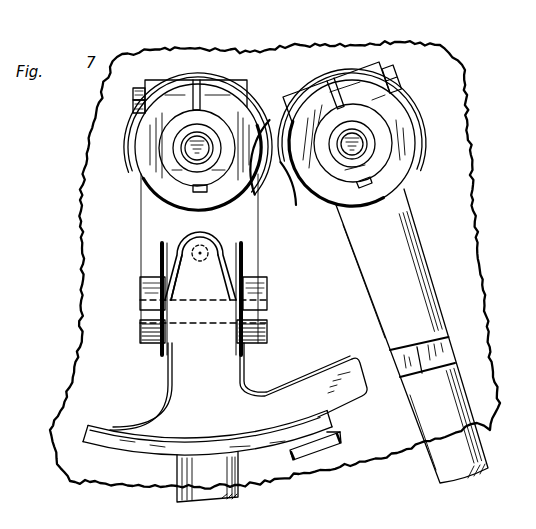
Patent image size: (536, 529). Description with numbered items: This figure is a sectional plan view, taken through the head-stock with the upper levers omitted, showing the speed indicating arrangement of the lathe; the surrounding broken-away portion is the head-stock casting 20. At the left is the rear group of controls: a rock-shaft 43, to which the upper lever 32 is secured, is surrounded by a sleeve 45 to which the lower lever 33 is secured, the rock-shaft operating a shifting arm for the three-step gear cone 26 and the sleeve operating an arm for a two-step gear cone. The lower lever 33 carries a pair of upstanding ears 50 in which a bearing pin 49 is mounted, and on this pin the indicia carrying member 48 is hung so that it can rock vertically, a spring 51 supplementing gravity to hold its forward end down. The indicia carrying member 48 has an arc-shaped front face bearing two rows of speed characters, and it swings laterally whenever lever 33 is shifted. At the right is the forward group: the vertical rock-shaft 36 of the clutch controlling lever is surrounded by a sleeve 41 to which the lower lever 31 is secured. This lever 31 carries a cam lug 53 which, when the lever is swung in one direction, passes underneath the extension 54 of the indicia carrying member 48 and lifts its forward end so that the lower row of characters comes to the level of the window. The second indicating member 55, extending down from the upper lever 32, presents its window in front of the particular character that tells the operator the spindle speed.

The table or base plate 20 is at (459, 195).
The three-step gear cone 26 is at (529, 356).
The lower lever 31 is at (410, 287).
The upper lever 32 is at (207, 470).
The lower lever 33 is at (200, 479).
The vertical rock-shaft 36 is at (361, 137).
The sleeve 41 is at (376, 160).
The rock-shaft 43 is at (190, 150).
The sleeve 45 is at (182, 173).
The indicia carrying member 48 is at (173, 394).
The bearing pin 49 is at (266, 308).
The upstanding ears 50 is at (265, 337).
The spring 51 is at (177, 252).
The cam lug 53 is at (418, 361).
The extension 54 is at (338, 374).
The second indicating member 55 is at (325, 452).